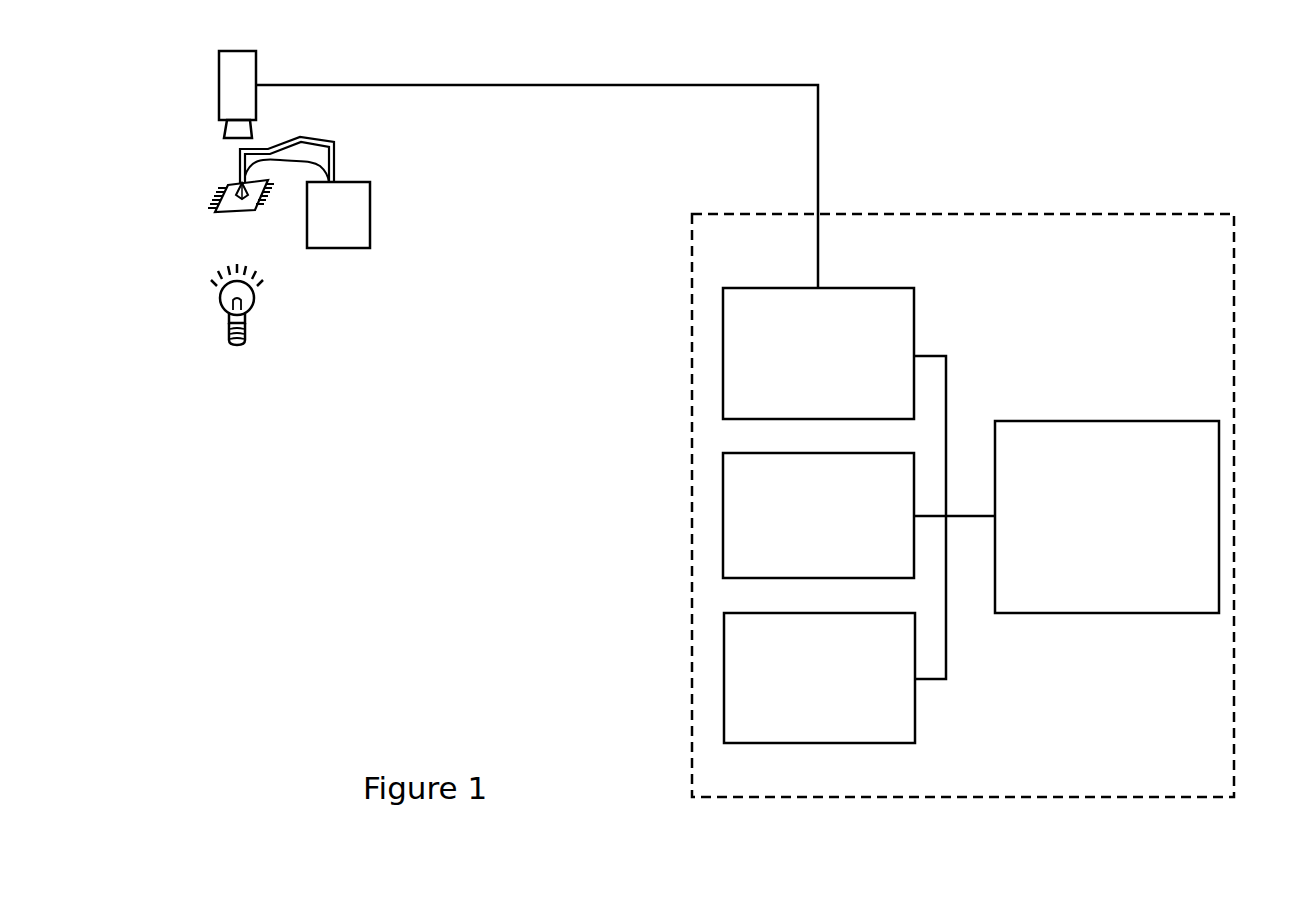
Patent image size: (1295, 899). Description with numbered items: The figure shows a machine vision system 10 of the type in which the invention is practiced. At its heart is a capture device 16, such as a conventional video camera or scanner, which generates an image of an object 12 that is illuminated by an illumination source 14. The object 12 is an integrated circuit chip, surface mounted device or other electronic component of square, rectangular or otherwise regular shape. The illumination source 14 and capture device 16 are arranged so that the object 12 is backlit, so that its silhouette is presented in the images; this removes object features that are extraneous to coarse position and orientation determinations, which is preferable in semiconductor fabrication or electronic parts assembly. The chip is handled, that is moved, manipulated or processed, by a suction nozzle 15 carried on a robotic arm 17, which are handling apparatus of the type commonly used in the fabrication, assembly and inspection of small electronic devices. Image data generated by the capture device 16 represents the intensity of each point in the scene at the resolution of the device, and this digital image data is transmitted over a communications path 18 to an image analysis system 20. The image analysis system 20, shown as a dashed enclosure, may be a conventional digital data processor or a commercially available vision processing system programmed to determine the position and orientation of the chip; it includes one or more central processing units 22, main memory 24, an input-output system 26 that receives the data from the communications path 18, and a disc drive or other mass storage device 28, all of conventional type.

The machine vision system 10 is at (410, 380).
The object 12 is at (228, 187).
The illumination source 14 is at (222, 310).
The suction nozzle 15 is at (243, 199).
The capture device 16 is at (248, 83).
The robotic arm 17 is at (363, 197).
The communications path 18 is at (818, 198).
The image analysis system 20 is at (692, 759).
The central processing unit 22 is at (1208, 450).
The main memory 24 is at (723, 483).
The input-output system 26 is at (723, 319).
The disc drive 28 is at (724, 643).